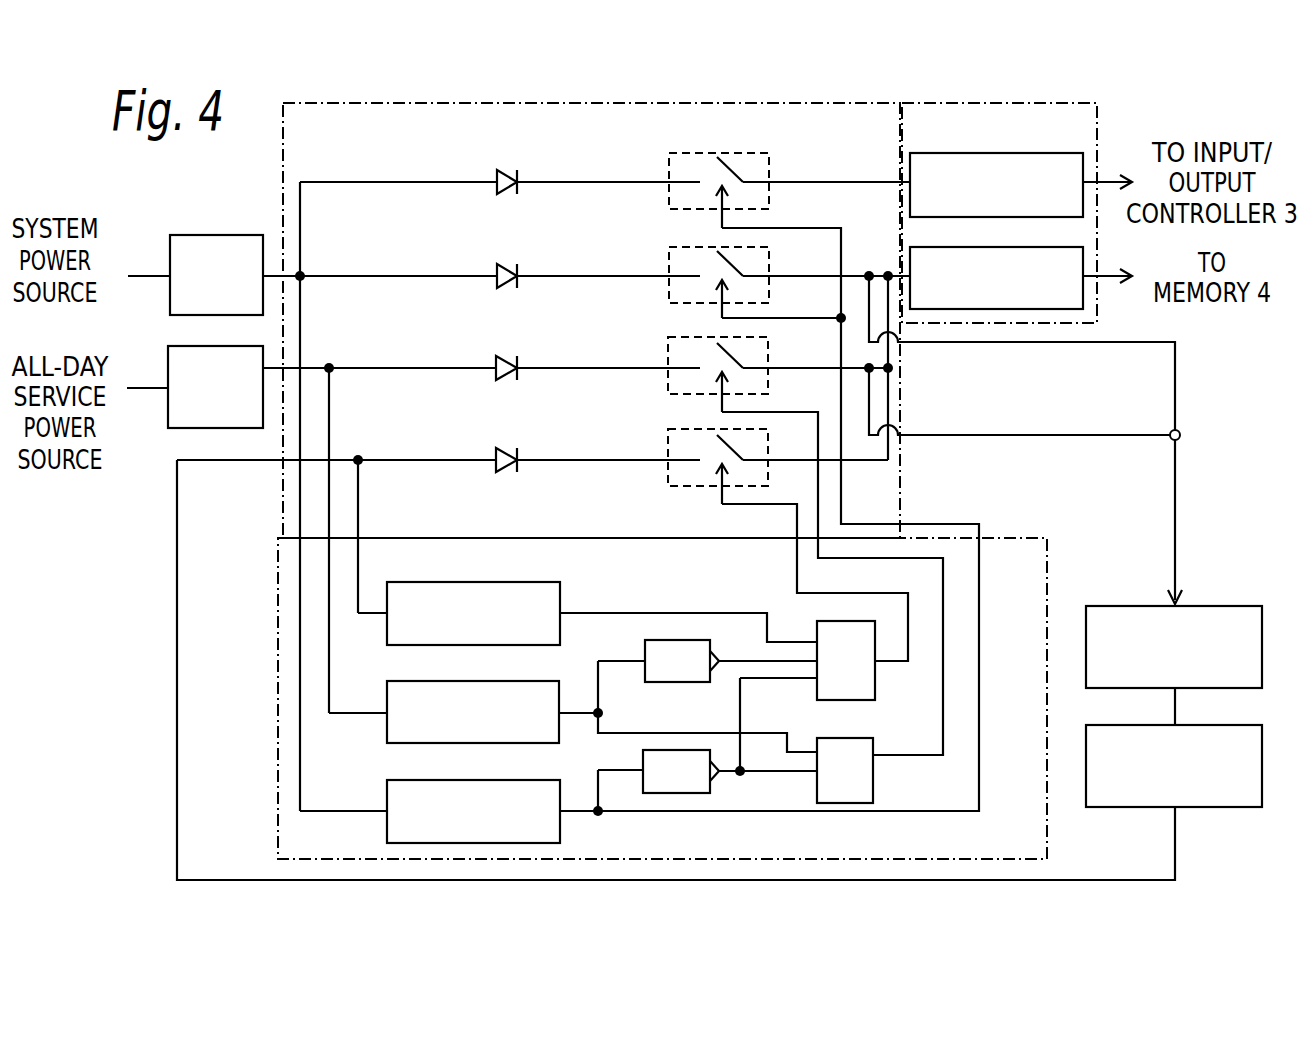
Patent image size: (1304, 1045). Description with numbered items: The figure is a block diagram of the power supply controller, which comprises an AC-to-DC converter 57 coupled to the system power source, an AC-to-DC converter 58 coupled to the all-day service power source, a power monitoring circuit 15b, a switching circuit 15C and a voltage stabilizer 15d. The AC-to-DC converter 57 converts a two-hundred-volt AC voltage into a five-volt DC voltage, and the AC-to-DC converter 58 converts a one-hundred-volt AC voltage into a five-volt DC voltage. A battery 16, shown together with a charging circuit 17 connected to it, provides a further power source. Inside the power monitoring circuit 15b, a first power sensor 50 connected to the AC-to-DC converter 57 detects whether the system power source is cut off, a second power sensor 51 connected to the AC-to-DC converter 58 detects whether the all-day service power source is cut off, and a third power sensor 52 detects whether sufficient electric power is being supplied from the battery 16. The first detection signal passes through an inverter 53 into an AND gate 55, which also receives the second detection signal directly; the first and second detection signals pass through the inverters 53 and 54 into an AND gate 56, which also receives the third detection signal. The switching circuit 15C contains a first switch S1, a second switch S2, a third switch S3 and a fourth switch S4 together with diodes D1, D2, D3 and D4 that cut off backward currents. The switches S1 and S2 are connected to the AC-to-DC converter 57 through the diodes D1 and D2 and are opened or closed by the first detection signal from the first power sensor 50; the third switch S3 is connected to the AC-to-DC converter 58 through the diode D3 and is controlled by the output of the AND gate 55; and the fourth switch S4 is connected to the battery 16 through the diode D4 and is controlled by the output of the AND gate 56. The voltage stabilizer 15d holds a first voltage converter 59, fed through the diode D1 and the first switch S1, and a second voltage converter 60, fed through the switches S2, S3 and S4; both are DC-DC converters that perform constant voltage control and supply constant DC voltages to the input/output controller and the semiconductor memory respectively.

The switching circuit 15C is at (280, 198).
The voltage stabilizer 15d is at (1100, 131).
The power monitoring circuit 15b is at (1047, 576).
The AC-to-DC converter 57 is at (210, 235).
The AC-to-DC converter 58 is at (180, 429).
The first voltage converter 59 is at (991, 153).
The second voltage converter 60 is at (925, 247).
The third power sensor 52 is at (561, 583).
The second power sensor 51 is at (544, 681).
The first power sensor 50 is at (543, 781).
The inverter 54 is at (690, 683).
The inverter 53 is at (711, 784).
The AND gate 56 is at (874, 686).
The AND gate 55 is at (874, 774).
The charging circuit 17 is at (1222, 606).
The battery 16 is at (1222, 807).
The first switch S1 is at (670, 166).
The second switch S2 is at (670, 259).
The third switch S3 is at (669, 352).
The fourth switch S4 is at (669, 444).
The diode D1 is at (510, 201).
The diode D2 is at (510, 295).
The diode D3 is at (508, 387).
The diode D4 is at (508, 480).